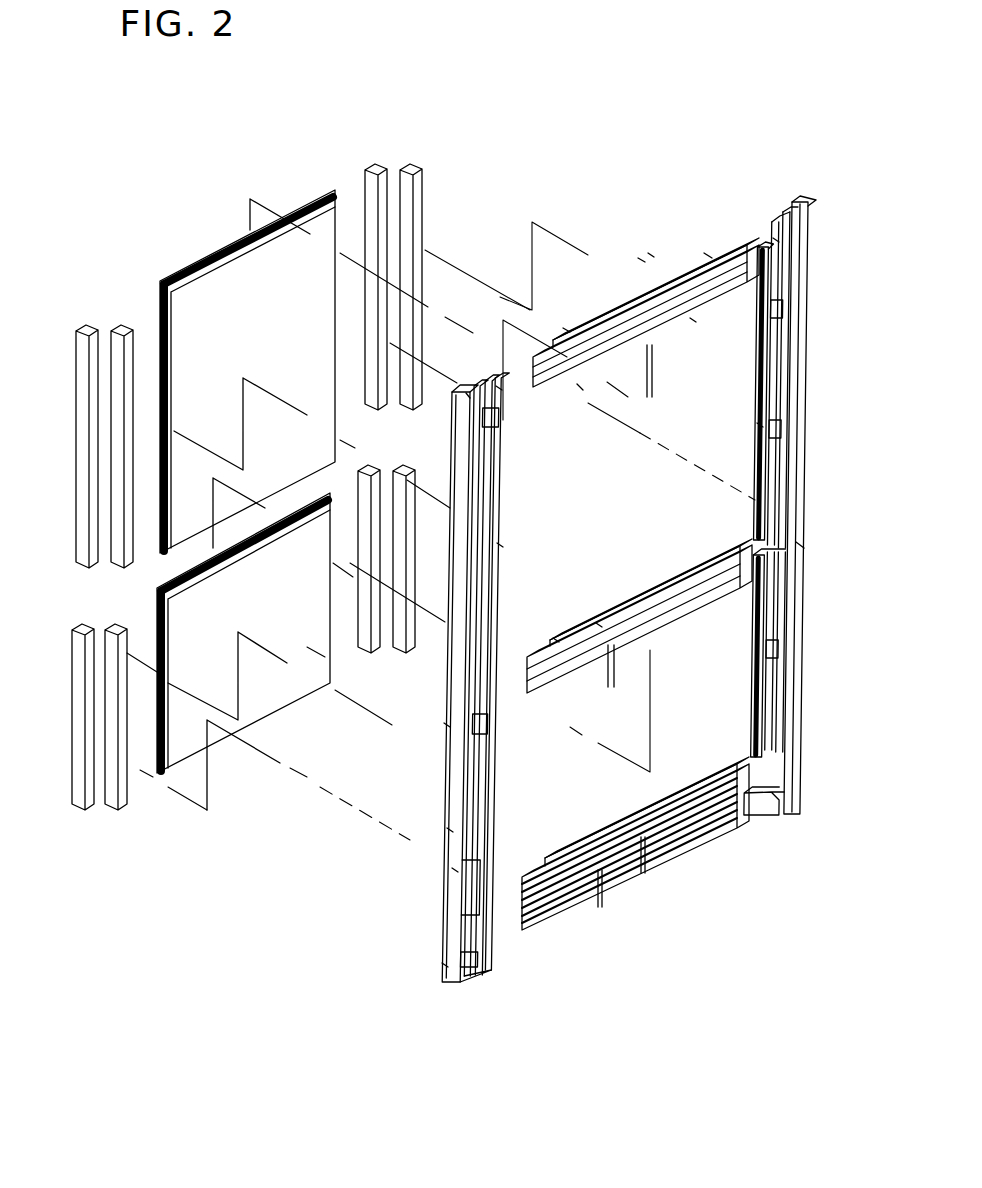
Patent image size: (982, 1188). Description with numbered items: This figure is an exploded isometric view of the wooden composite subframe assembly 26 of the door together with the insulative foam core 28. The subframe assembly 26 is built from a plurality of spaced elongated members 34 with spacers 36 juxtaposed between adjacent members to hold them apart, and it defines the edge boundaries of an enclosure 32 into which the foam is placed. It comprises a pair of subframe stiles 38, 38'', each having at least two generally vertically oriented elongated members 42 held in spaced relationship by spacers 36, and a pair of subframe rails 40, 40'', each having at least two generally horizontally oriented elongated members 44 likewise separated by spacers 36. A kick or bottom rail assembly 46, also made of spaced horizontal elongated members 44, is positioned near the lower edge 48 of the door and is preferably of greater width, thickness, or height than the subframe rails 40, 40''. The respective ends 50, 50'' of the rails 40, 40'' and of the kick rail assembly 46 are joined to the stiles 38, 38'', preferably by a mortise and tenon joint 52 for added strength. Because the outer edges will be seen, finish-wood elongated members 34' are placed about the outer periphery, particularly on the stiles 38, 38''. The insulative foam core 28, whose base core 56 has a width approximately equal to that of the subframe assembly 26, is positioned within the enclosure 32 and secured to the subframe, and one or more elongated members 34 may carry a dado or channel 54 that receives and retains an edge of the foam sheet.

The subframe assembly 26 is at (651, 255).
The insulative foam core 28 is at (410, 160).
The enclosure 32 is at (566, 330).
The elongated members 34 is at (617, 627).
The elongated members of finish wood material 34' is at (619, 559).
The spacers 36 is at (708, 256).
The subframe stile 38 is at (442, 677).
The subframe stile 38'' is at (806, 505).
The subframe rail 40 is at (646, 312).
The subframe rail 40'' is at (639, 611).
The vertically oriented elongated members 42 is at (460, 468).
The horizontally oriented elongated members 44 is at (645, 340).
The kick or bottom rail assembly 46 is at (680, 900).
The lower edge 48 is at (690, 875).
The end of subframe rail 50 is at (485, 877).
The end of subframe rail 50'' is at (640, 585).
The mortise and tenon joint 52 is at (776, 240).
The dado or channel 54 is at (760, 425).
The base core 56 is at (312, 203).